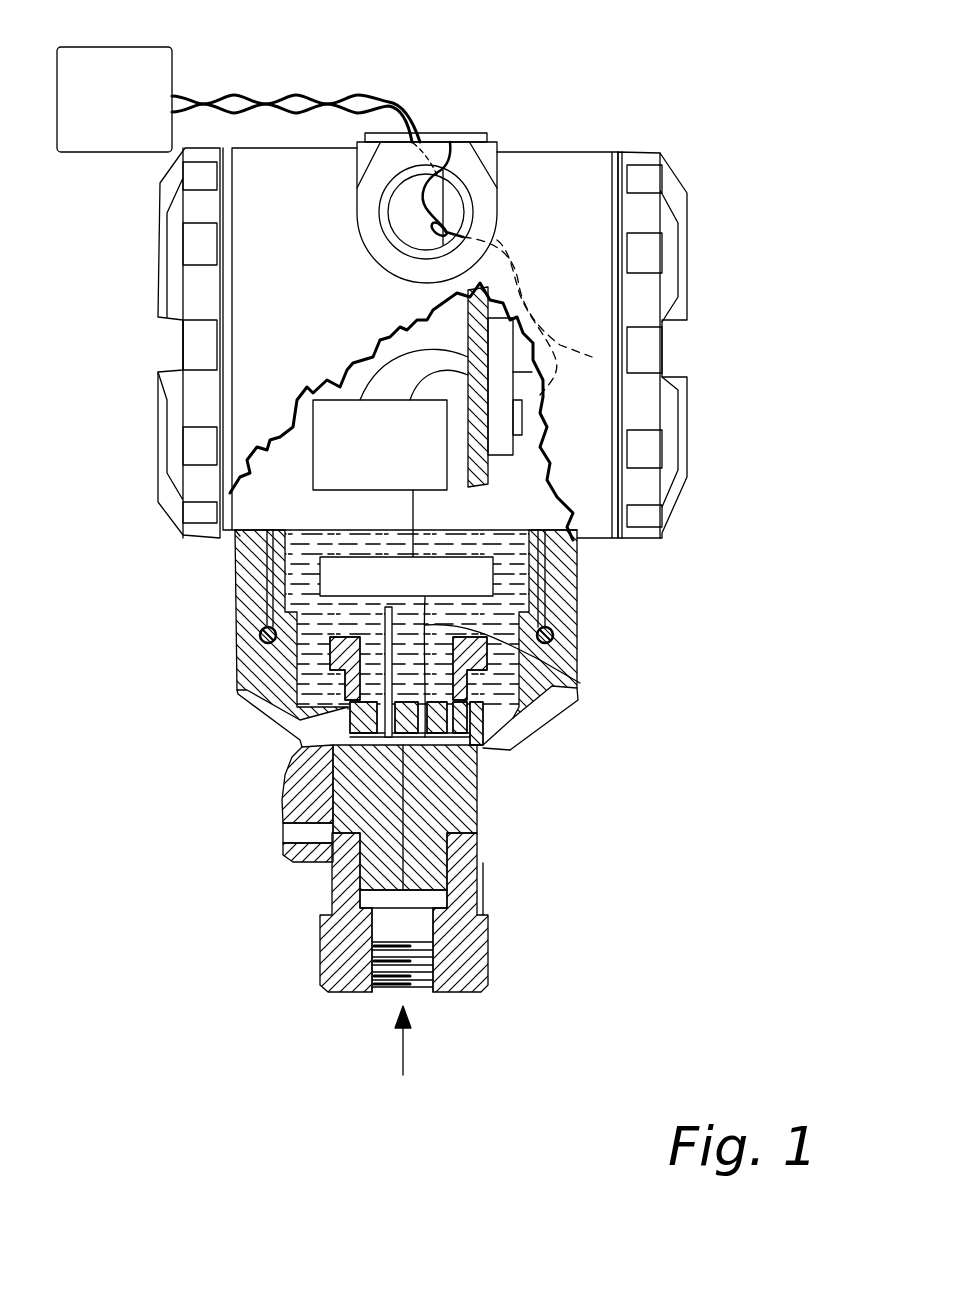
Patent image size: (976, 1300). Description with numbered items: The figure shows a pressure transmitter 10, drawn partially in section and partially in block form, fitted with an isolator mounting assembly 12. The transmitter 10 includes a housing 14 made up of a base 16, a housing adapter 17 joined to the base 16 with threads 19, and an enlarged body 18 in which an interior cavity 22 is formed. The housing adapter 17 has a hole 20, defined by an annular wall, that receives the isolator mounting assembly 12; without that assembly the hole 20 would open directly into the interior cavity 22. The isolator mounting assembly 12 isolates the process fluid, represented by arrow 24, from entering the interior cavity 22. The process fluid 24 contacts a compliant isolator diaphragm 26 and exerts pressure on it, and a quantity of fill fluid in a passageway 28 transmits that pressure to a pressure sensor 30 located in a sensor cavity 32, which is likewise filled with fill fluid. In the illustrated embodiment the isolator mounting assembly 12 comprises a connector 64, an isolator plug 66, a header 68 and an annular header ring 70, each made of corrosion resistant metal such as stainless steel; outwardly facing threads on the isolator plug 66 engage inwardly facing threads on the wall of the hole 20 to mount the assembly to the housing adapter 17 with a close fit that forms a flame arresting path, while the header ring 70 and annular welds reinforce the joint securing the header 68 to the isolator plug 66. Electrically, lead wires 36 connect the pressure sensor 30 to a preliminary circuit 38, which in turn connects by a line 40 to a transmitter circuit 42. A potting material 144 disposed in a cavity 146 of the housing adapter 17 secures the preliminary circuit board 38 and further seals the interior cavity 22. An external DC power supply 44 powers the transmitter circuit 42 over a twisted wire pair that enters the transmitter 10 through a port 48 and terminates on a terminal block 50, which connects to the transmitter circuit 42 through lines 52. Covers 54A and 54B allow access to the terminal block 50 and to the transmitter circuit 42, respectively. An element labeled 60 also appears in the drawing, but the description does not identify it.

The transmitter 10 is at (785, 229).
The isolator mounting assembly 12 is at (557, 901).
The housing 14 is at (606, 127).
The base 16 is at (300, 78).
The housing adapter 17 is at (565, 710).
The enlarged body 18 is at (517, 152).
The threads 19 is at (580, 568).
The hole 20 is at (330, 877).
The interior cavity 22 is at (235, 540).
The process fluid 24 is at (403, 1050).
The isolator diaphragm 26 is at (372, 915).
The passageway 28 is at (410, 822).
The pressure sensor 30 is at (347, 745).
The sensor cavity 32 is at (410, 745).
The lead wires 36 is at (580, 683).
The preliminary circuit 38 is at (290, 595).
The line 40 is at (417, 520).
The transmitter circuit 42 is at (312, 437).
The external DC power supply 44 is at (107, 150).
The port 48 is at (447, 160).
The terminal block 50 is at (513, 375).
The lines 52 is at (390, 348).
The cover 54A is at (690, 297).
The cover 54B is at (158, 287).
The O-ring seal 60 is at (262, 640).
The connector 64 is at (490, 985).
The isolator plug 66 is at (483, 872).
The header 68 is at (345, 735).
The annular header ring 70 is at (350, 720).
The potting material 144 is at (305, 562).
The cavity 146 is at (495, 576).